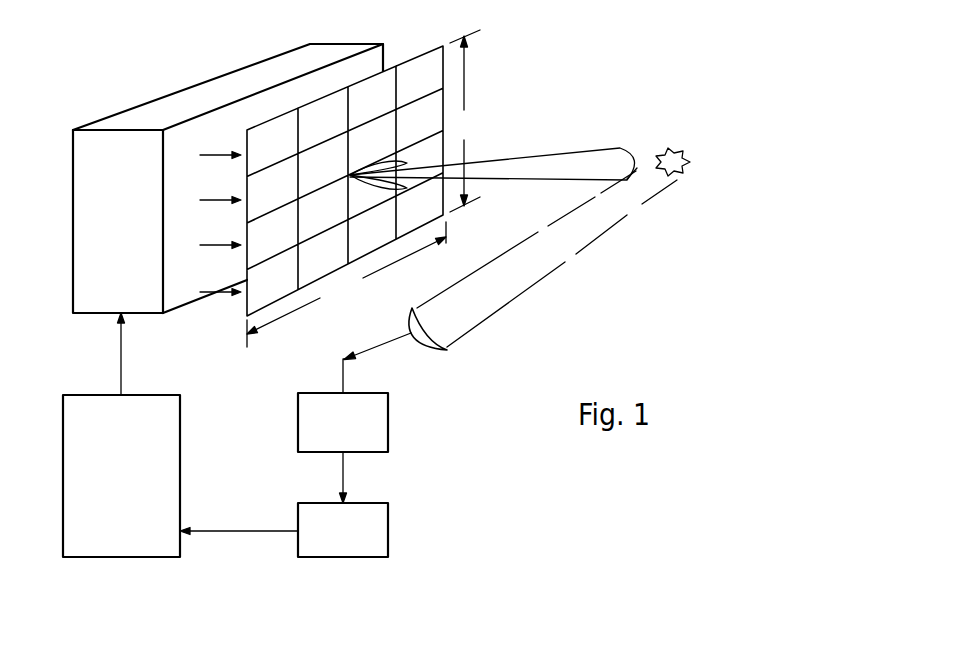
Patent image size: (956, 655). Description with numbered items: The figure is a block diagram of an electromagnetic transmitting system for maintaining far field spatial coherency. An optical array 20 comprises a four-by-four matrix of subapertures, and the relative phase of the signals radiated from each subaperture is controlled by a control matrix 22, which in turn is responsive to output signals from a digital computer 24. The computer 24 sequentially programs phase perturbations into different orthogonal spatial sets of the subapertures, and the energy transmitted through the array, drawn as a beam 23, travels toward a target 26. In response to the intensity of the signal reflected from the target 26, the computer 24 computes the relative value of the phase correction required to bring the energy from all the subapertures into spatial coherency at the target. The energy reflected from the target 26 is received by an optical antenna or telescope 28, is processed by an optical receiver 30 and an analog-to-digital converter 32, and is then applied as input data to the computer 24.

The optical array 20 is at (467, 63).
The control matrix 22 is at (263, 72).
The transmitted beam 23 is at (535, 163).
The digital computer 24 is at (100, 553).
The target 26 is at (688, 153).
The optical antenna or telescope 28 is at (437, 353).
The optical receiver 30 is at (398, 413).
The analog-to-digital (A/D) converter 32 is at (388, 528).